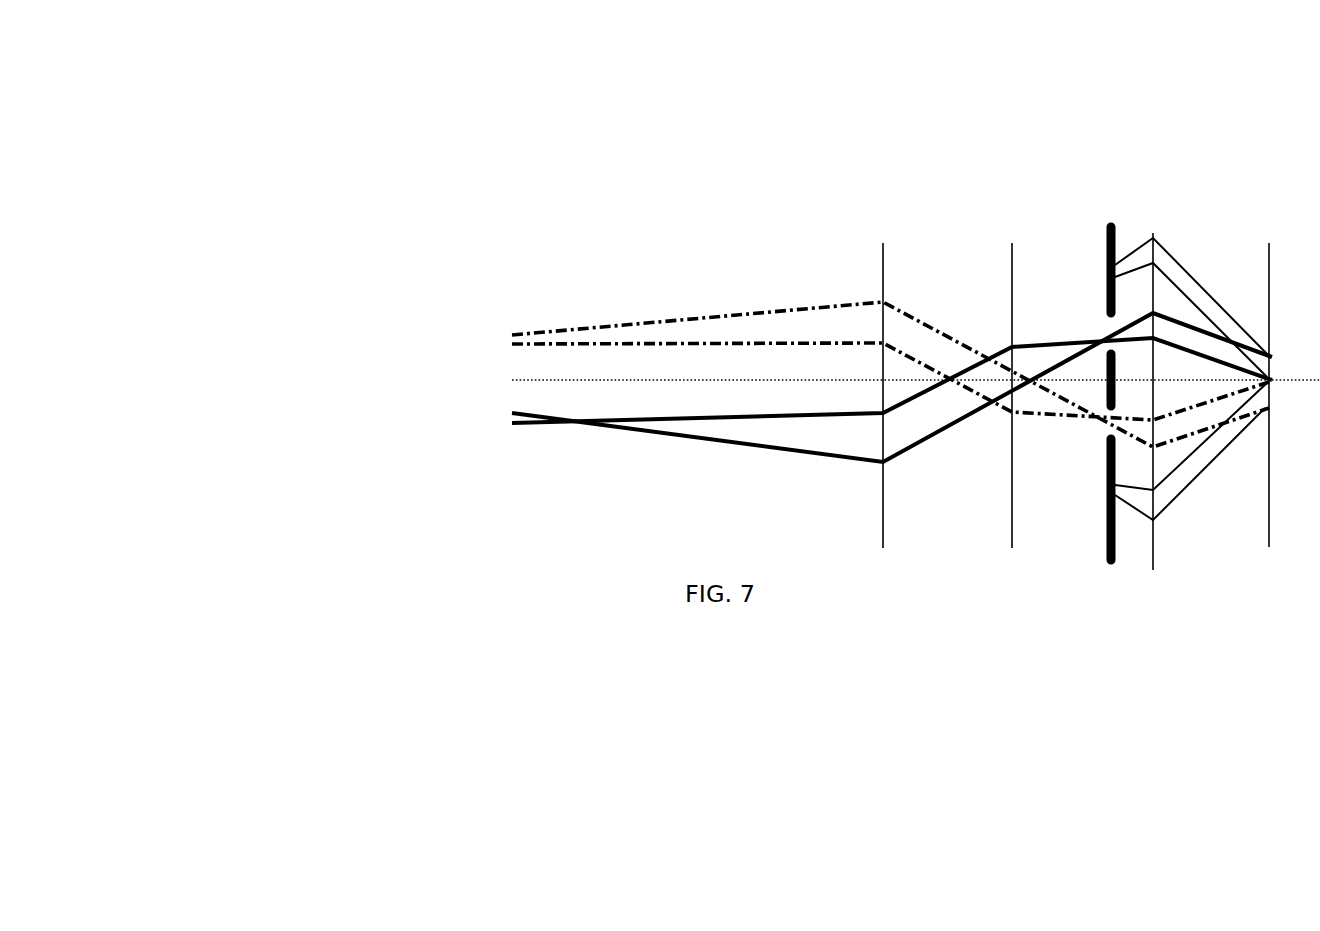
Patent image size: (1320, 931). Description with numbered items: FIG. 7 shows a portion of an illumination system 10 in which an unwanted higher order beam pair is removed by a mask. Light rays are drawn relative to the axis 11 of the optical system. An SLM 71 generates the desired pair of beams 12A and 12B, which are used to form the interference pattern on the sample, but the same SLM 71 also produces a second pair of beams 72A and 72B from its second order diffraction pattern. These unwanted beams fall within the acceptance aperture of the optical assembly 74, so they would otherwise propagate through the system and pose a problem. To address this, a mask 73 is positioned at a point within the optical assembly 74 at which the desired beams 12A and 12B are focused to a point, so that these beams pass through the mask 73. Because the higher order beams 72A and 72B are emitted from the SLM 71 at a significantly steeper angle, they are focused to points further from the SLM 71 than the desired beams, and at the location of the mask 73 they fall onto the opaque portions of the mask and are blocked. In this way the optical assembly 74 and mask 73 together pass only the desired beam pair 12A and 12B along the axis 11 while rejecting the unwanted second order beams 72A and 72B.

The illumination system 10 is at (138, 113).
The axis 11 is at (792, 382).
The first beam 12A is at (832, 443).
The second beam 12B is at (803, 327).
The SLM 71 is at (1268, 262).
The first higher order beam 72A is at (1183, 285).
The second higher order beam 72B is at (1190, 475).
The mask 73 is at (1108, 520).
The optical assembly 74 is at (1150, 568).